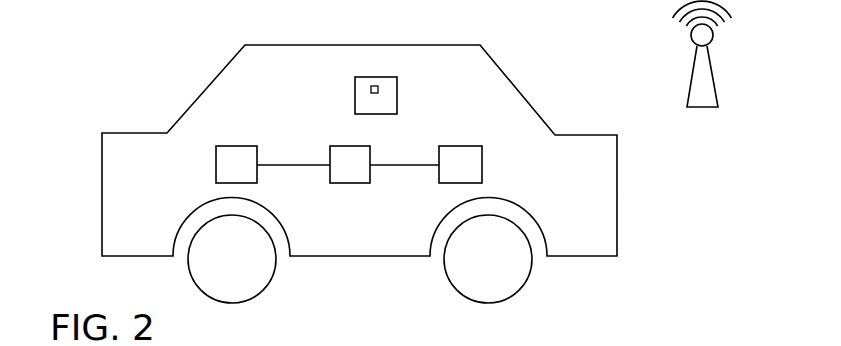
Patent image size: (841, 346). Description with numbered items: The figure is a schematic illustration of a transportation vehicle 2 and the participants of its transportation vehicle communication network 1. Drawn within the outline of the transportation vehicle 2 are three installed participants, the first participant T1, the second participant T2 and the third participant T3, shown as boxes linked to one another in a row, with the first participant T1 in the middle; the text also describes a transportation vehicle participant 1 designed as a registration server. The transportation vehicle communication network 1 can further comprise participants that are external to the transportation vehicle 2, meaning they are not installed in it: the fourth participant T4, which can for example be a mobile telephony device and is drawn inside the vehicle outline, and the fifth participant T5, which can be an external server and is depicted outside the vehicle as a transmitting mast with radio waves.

The transportation vehicle communication network 1 is at (338, 212).
The transportation vehicle 2 is at (196, 82).
The first participant T1 is at (358, 183).
The second participant T2 is at (228, 146).
The third participant T3 is at (467, 147).
The fourth participant T4 is at (396, 94).
The fifth participant T5 is at (714, 79).